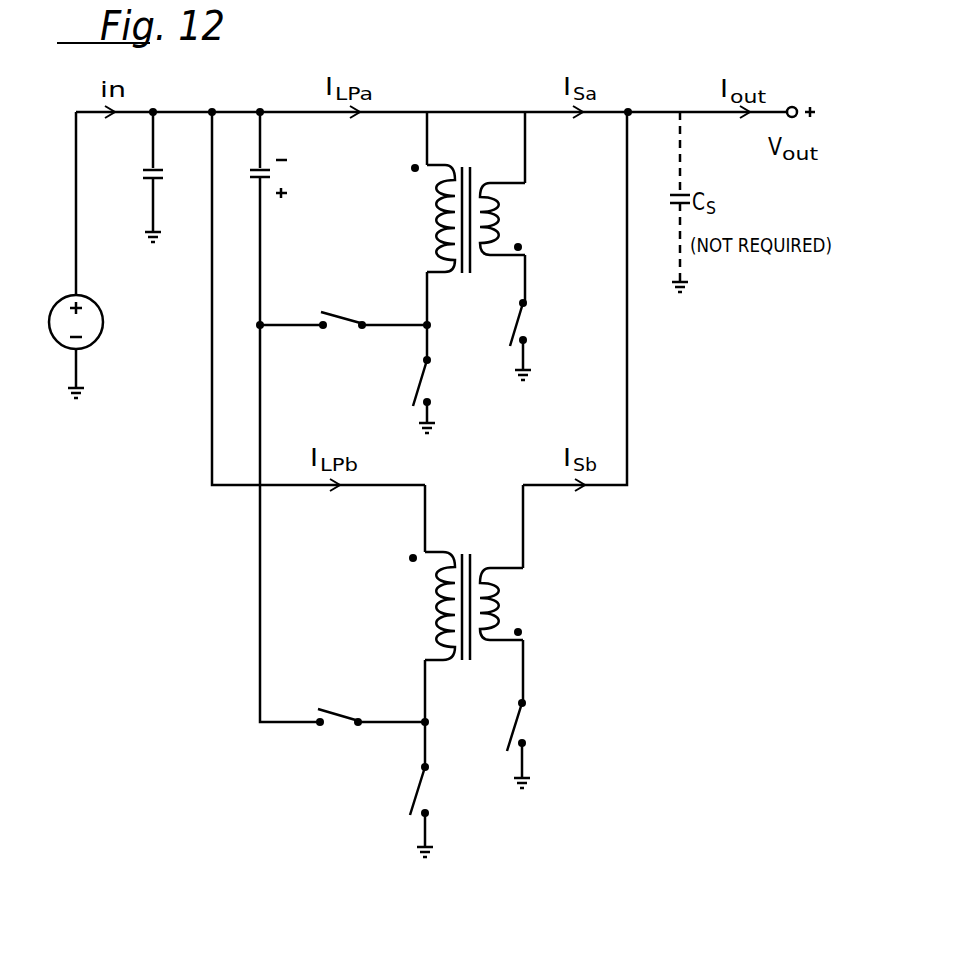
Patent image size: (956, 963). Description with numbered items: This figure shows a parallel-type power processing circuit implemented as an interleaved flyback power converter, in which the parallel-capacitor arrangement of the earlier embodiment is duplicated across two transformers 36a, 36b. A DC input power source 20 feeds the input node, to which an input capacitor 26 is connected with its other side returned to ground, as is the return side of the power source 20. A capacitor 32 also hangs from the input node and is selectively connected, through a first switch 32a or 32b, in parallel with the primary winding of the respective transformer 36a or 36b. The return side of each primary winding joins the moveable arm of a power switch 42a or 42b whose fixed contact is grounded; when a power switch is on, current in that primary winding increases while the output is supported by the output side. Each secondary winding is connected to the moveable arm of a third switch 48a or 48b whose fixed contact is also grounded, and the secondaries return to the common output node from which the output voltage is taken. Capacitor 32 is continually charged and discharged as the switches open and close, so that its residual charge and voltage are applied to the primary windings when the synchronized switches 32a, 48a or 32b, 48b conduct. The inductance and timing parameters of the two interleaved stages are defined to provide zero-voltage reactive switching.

The DC input power source 20 is at (89, 295).
The capacitor 26 is at (146, 170).
The series capacitor 32 is at (257, 178).
The transformer 36a is at (487, 113).
The transformer 36b is at (489, 500).
The first switch 32a is at (341, 330).
The first switch 32b is at (338, 727).
The power switch 42a is at (420, 383).
The power switch 42b is at (418, 796).
The third switch 48a is at (523, 325).
The third switch 48b is at (510, 731).